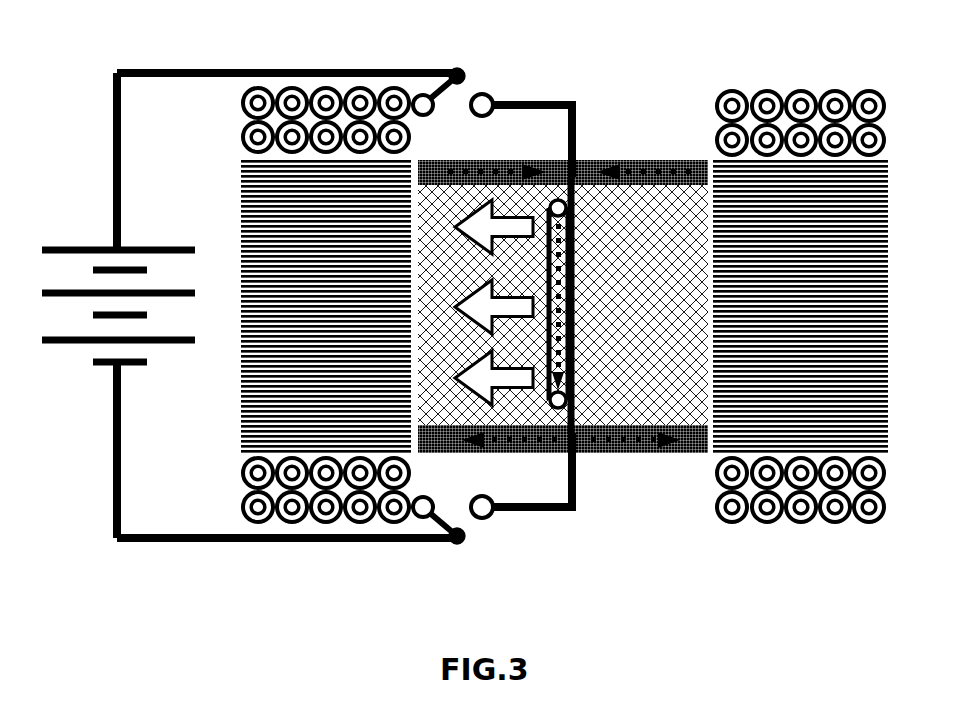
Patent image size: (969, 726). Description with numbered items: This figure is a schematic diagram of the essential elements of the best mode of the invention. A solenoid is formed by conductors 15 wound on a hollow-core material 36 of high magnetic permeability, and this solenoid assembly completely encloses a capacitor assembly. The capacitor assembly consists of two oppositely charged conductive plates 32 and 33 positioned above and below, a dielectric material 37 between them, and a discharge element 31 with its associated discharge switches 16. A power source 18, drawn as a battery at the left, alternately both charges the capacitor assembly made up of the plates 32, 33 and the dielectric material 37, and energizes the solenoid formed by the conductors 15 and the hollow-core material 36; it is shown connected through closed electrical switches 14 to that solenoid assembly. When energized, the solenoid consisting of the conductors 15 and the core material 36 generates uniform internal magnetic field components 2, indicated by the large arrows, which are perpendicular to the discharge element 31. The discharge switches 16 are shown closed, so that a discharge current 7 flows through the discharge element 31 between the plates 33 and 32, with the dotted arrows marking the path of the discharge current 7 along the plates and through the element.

The uniform internal magnetic field components 2 is at (476, 297).
The discharge current 7 is at (668, 174).
The electrical switches 14 is at (462, 74).
The conductors 15 is at (797, 92).
The discharge switches 16 is at (582, 183).
The power source 18 is at (98, 244).
The discharge element 31 is at (578, 304).
The conductive plate 32 is at (603, 455).
The conductive plate 33 is at (620, 162).
The hollow-core material 36 is at (258, 348).
The dielectric material 37 is at (637, 354).